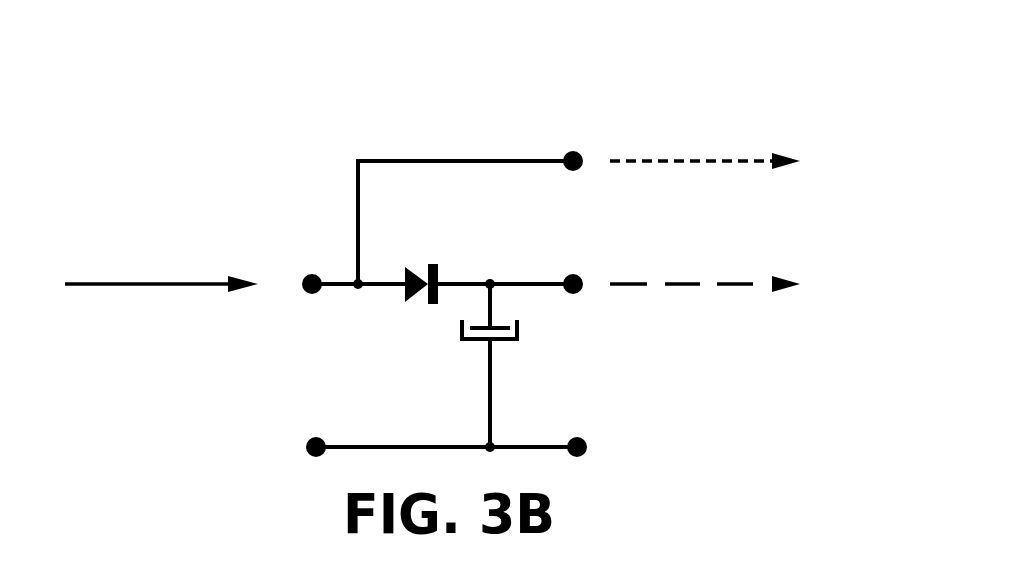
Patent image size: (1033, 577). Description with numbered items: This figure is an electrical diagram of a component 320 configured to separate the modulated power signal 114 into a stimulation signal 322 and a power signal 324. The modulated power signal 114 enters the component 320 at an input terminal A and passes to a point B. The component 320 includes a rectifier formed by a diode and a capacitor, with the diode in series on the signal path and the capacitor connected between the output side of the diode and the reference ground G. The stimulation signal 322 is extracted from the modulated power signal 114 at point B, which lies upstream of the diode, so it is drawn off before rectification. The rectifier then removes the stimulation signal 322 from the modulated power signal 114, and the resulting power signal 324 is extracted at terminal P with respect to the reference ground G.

The component 320 is at (762, 92).
The modulated power signal 114 is at (220, 383).
The stimulation signal 322 is at (947, 227).
The power signal 324 is at (880, 355).